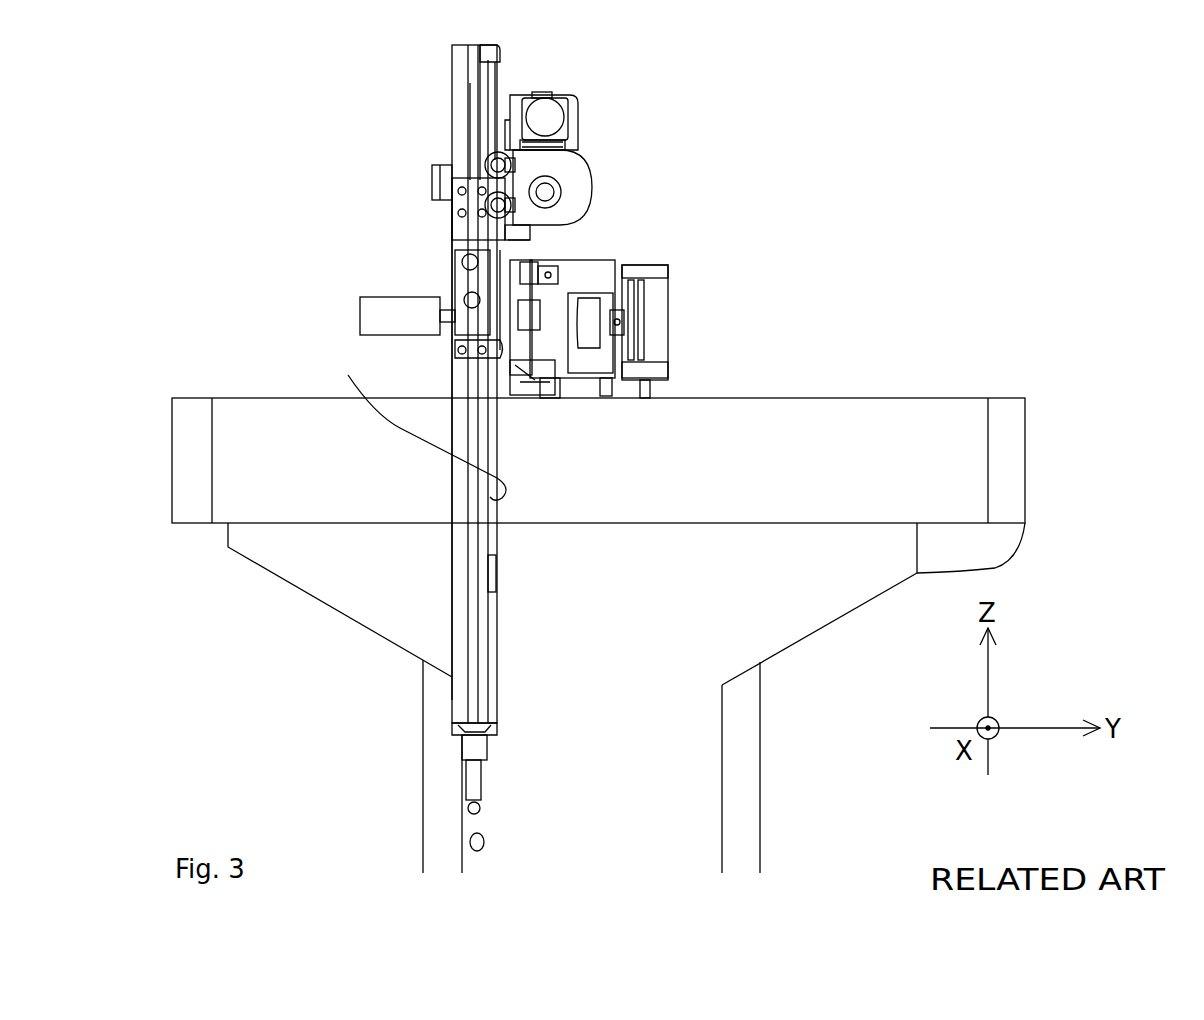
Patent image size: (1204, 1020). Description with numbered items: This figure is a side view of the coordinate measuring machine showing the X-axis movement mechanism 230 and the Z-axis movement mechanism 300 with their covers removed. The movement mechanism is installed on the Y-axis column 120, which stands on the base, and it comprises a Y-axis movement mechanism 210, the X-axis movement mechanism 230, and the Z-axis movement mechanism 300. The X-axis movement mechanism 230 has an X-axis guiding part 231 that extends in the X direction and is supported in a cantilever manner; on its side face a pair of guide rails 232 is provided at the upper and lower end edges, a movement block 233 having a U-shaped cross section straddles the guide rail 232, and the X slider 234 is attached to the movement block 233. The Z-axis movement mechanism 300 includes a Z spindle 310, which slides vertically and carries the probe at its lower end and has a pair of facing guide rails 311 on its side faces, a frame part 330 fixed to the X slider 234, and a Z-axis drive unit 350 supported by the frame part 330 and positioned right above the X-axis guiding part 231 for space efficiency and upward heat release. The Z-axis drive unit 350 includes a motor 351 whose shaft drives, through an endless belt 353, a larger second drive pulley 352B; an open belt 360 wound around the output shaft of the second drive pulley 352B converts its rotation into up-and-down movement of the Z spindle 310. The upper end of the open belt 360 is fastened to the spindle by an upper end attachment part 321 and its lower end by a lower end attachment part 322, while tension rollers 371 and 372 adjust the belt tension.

The Y-axis column 120 is at (700, 810).
The Y-axis movement mechanism 210 is at (980, 440).
The X-axis movement mechanism 230 is at (650, 254).
The X-axis guiding part 231 is at (630, 300).
The guide rail 232 is at (535, 265).
The movement block 233 is at (510, 378).
The X slider 234 is at (480, 270).
The Z-axis movement mechanism 300 is at (768, 215).
The Z spindle 310 is at (455, 680).
The guide rail 311 is at (470, 620).
The upper end attachment part 321 is at (492, 60).
The lower end attachment part 322 is at (497, 572).
The frame part 330 is at (560, 210).
The Z-axis drive unit 350 is at (585, 118).
The motor 351 is at (545, 112).
The second drive pulley 352B is at (590, 190).
The endless belt 353 is at (585, 182).
The open belt 360 is at (400, 428).
The tension roller 371 is at (490, 158).
The tension roller 372 is at (492, 218).